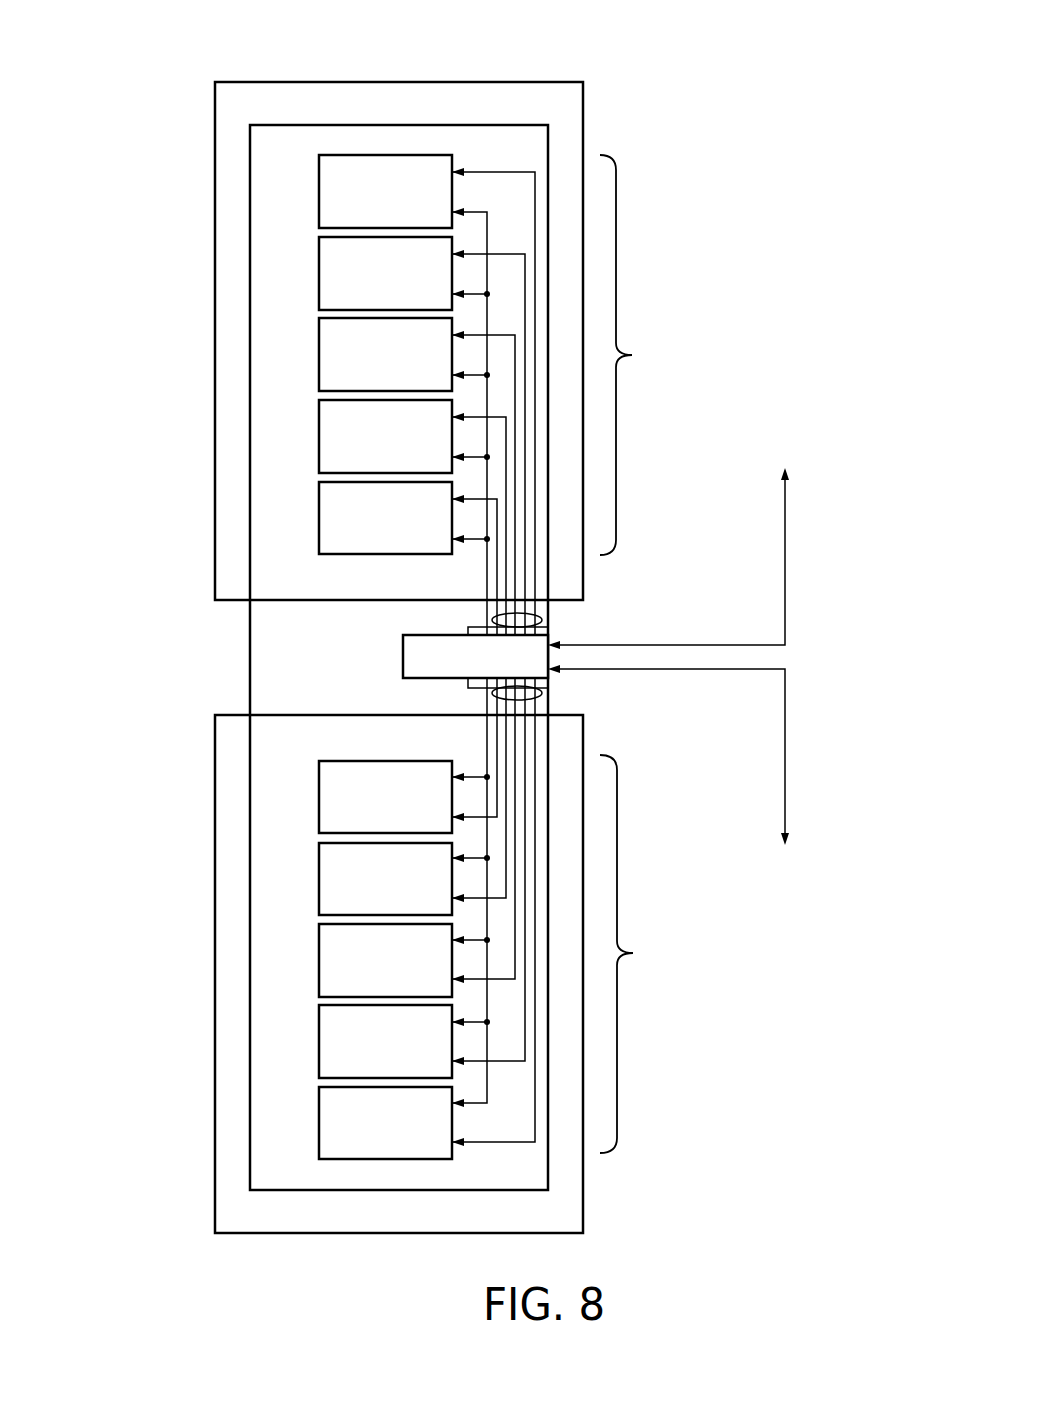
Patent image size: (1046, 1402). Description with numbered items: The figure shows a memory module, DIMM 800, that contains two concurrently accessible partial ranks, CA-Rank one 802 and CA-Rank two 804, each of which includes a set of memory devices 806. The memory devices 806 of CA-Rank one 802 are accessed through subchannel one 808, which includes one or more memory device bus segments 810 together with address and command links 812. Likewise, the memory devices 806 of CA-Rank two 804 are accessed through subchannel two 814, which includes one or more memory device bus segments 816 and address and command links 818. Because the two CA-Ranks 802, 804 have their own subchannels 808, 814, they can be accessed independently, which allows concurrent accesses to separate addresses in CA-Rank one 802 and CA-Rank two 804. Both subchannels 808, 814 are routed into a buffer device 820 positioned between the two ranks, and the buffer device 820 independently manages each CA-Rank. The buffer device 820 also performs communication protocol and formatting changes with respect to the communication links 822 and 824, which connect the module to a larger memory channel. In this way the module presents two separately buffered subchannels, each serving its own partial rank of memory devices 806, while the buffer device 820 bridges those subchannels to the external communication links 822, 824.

The DIMM 800 is at (236, 678).
The CA-Rank one 802 is at (357, 91).
The CA-Rank two 804 is at (362, 1223).
The memory devices 806 is at (328, 193).
The subchannel one 808 is at (678, 355).
The memory device bus segments 810 is at (542, 620).
The address and command links 812 is at (487, 592).
The subchannel two 814 is at (680, 954).
The memory device bus segments 816 is at (542, 693).
The address and command links 818 is at (487, 722).
The buffer device 820 is at (403, 667).
The communication link 822 is at (785, 545).
The communication link 824 is at (785, 768).